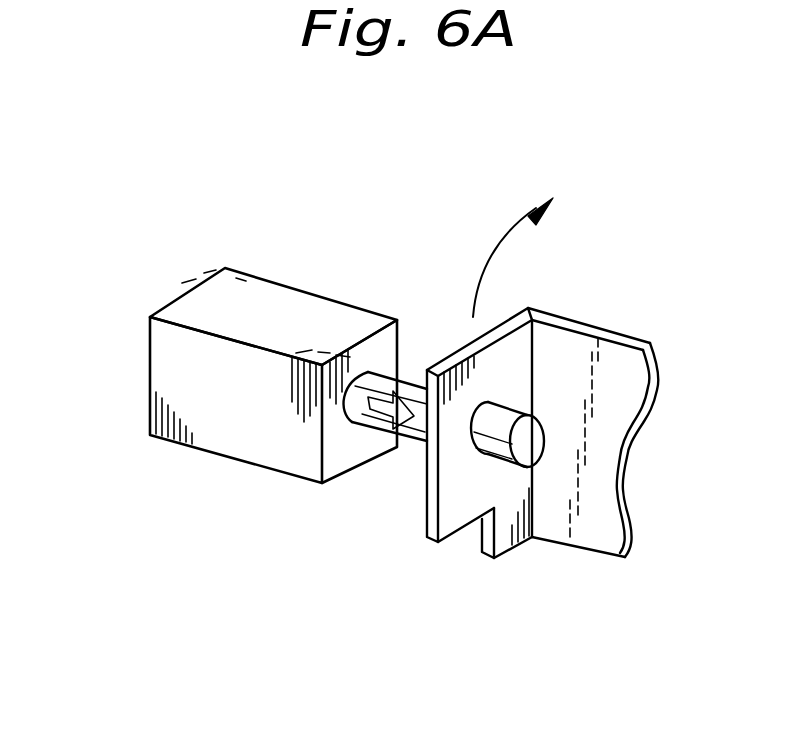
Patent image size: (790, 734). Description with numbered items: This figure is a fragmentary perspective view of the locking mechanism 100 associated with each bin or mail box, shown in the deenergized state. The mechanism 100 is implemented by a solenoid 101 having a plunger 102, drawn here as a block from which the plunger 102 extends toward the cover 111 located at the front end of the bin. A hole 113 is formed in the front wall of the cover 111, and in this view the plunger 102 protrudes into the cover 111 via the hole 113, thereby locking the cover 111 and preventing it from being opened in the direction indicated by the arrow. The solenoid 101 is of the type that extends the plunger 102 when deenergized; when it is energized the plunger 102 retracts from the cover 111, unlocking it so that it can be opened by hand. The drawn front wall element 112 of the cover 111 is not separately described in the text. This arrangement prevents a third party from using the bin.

The locking mechanism 100 is at (494, 188).
The solenoid 101 is at (157, 360).
The plunger 102 is at (382, 413).
The cover 111 is at (597, 332).
The front plate 112 is at (460, 357).
The hole 113 is at (488, 457).